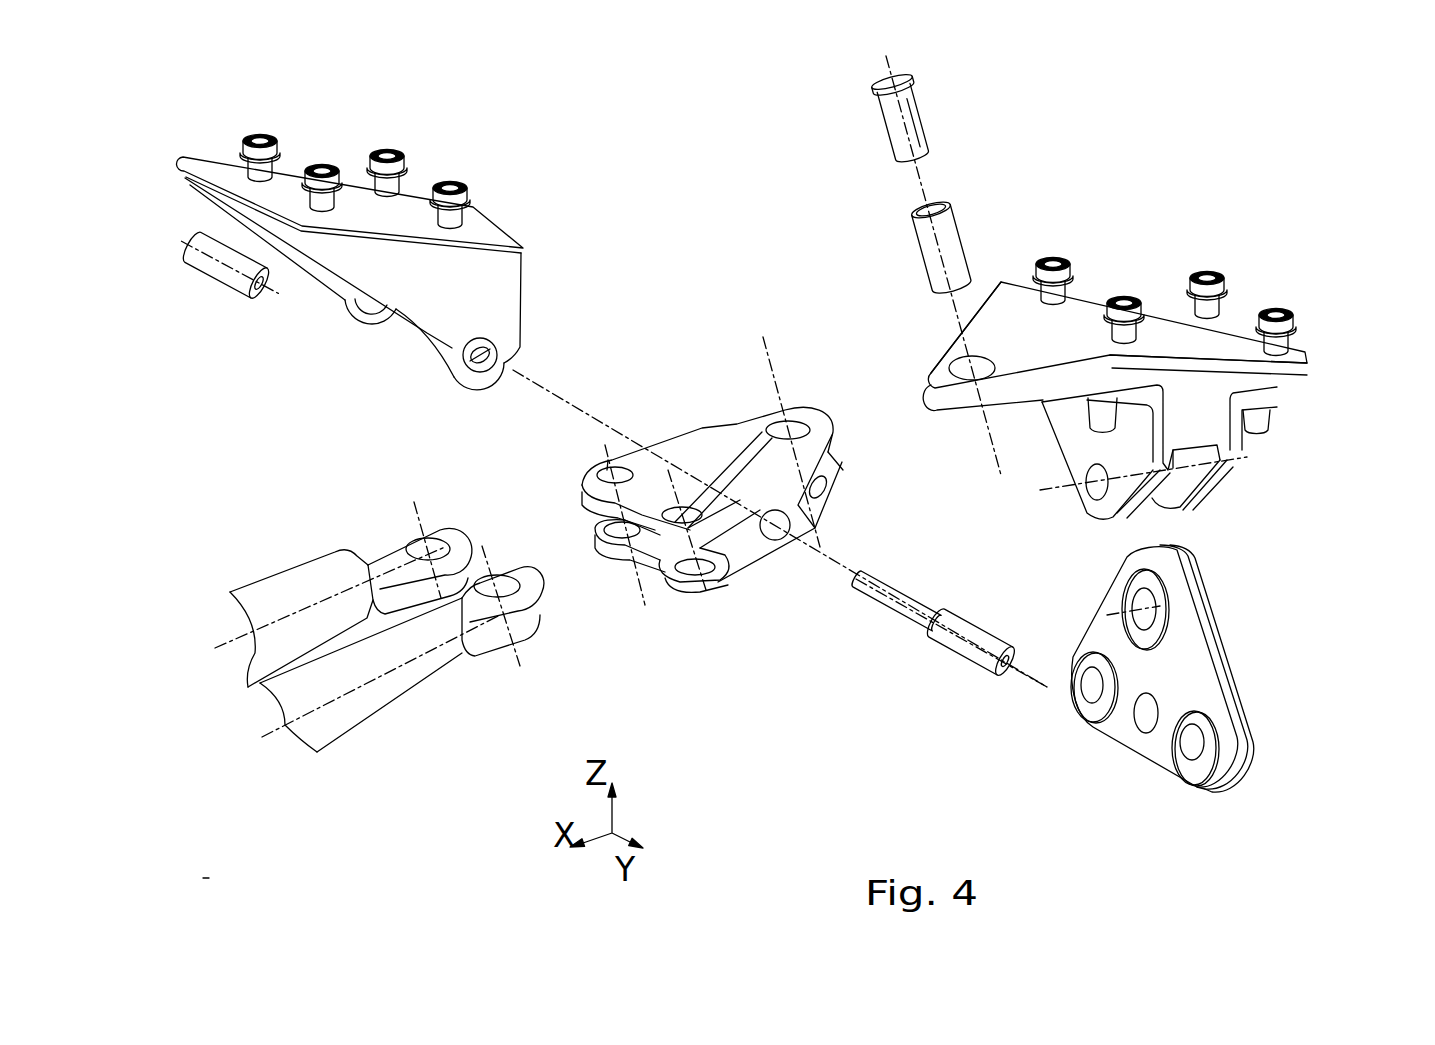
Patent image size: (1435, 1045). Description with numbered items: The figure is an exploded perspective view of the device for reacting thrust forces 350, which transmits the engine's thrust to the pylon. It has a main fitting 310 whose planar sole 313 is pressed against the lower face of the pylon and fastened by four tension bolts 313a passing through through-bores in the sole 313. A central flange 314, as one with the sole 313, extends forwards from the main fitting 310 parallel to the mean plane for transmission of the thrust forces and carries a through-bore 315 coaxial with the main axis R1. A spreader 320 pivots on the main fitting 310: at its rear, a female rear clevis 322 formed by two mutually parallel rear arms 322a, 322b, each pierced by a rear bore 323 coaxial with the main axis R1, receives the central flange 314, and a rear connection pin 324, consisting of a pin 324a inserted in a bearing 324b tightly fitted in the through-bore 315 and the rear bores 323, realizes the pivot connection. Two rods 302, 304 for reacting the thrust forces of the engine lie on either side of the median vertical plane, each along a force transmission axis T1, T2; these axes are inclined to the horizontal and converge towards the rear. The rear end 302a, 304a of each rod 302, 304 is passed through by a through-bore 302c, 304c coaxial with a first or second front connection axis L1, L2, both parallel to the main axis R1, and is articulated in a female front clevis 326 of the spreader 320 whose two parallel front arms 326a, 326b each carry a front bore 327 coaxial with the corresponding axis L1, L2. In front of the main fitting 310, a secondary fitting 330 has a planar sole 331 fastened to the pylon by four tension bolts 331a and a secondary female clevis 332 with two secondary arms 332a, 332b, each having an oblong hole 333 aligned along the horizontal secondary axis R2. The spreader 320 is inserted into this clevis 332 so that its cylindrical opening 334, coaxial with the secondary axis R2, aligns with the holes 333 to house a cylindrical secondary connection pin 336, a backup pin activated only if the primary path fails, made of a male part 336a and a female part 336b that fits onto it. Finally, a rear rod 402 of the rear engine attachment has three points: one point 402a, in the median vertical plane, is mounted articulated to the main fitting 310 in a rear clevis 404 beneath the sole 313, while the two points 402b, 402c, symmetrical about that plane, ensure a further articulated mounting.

The rod 302 is at (334, 581).
The rear end 302a is at (329, 565).
The through-bore 302c is at (437, 545).
The rod 304 is at (389, 665).
The rear end 304a is at (389, 680).
The through-bore 304c is at (517, 584).
The main fitting 310 is at (1124, 367).
The planar sole 313 is at (1225, 367).
The tension bolts 313a is at (1186, 262).
The central flange 314 is at (977, 340).
The through-bore 315 is at (962, 364).
The spreader 320 is at (683, 603).
The female rear clevis 322 is at (767, 499).
The rear arm 322a is at (823, 450).
The rear arm 322b is at (847, 480).
The rear bore 323 is at (820, 467).
The rear connection pin 324 is at (957, 298).
The pin 324a is at (919, 122).
The bearing 324b is at (956, 233).
The female front clevis 326 is at (779, 594).
The front arm 326a is at (747, 550).
The front arm 326b is at (717, 597).
The front bore 327 is at (610, 547).
The secondary fitting 330 is at (420, 270).
The planar sole 331 is at (334, 164).
The tension bolts 331a is at (477, 180).
The secondary female clevis 332 is at (393, 309).
The secondary arm 332a is at (513, 373).
The secondary arm 332b is at (337, 283).
The hole 333 is at (492, 350).
The cylindrical opening 334 is at (823, 527).
The secondary connection pin 336 is at (964, 663).
The male part 336a is at (968, 640).
The female part 336b is at (210, 267).
The device for reacting thrust forces 350 is at (1124, 337).
The rear rod 402 is at (1201, 701).
The point 402a is at (1143, 603).
The point 402b is at (1088, 693).
The point 402c is at (1190, 743).
The rear clevis 404 is at (1254, 503).
The rotation axis R1 is at (886, 58).
The secondary axis R2 is at (1047, 587).
The first front connection axis L1 is at (605, 460).
The second front connection axis L2 is at (710, 607).
The force transmission axis T1 is at (303, 606).
The force transmission axis T2 is at (509, 739).